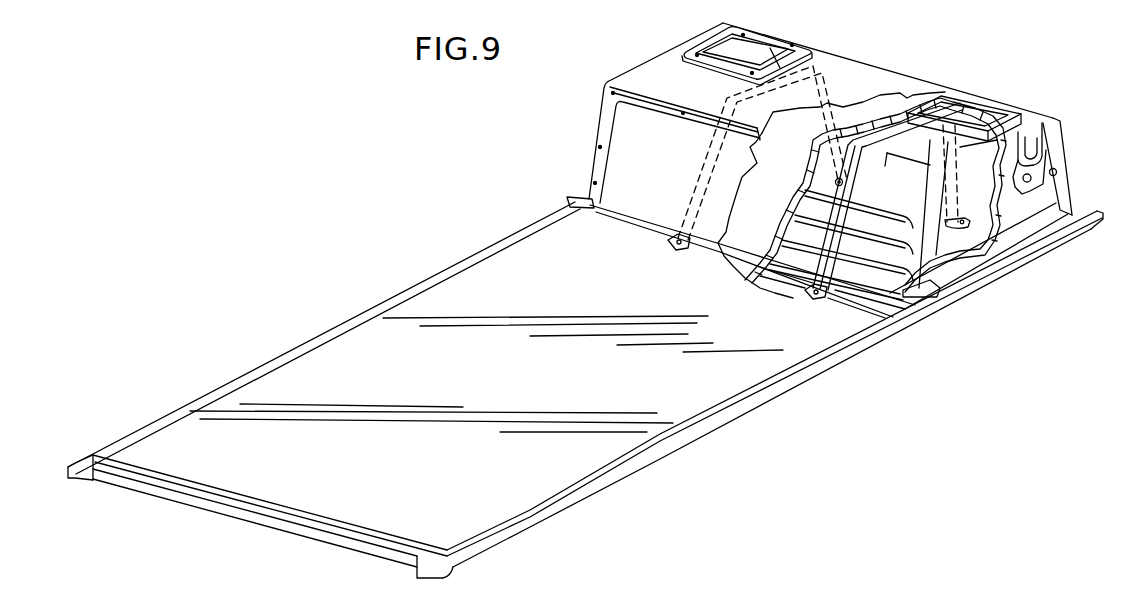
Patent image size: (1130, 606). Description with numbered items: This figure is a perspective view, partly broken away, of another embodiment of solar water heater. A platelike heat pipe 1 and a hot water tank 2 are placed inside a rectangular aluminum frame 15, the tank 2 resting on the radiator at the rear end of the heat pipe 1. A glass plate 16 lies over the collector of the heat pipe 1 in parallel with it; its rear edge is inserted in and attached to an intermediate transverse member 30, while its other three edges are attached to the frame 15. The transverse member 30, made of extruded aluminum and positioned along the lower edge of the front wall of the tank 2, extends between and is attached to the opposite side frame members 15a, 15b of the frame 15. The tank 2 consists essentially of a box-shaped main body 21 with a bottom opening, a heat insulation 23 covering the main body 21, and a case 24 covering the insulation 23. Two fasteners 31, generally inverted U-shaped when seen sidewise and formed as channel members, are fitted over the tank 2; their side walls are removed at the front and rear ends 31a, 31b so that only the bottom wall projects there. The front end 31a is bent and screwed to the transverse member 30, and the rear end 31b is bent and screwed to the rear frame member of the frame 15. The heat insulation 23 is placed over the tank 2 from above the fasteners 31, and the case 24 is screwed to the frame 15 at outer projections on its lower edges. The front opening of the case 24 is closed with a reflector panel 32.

The heat pipe 1 is at (843, 312).
The hot water tank 2 is at (955, 267).
The rectangular frame 15 is at (713, 421).
The side frame member 15a is at (374, 303).
The side frame member 15b is at (793, 382).
The glass plate 16 is at (312, 364).
The main body 21 is at (937, 268).
The heat insulation 23 is at (901, 107).
The case 24 is at (866, 73).
The intermediate transverse member 30 is at (878, 307).
The fastener 31 is at (832, 56).
The front end 31a is at (668, 240).
The rear end 31b is at (845, 182).
The reflector panel 32 is at (622, 140).